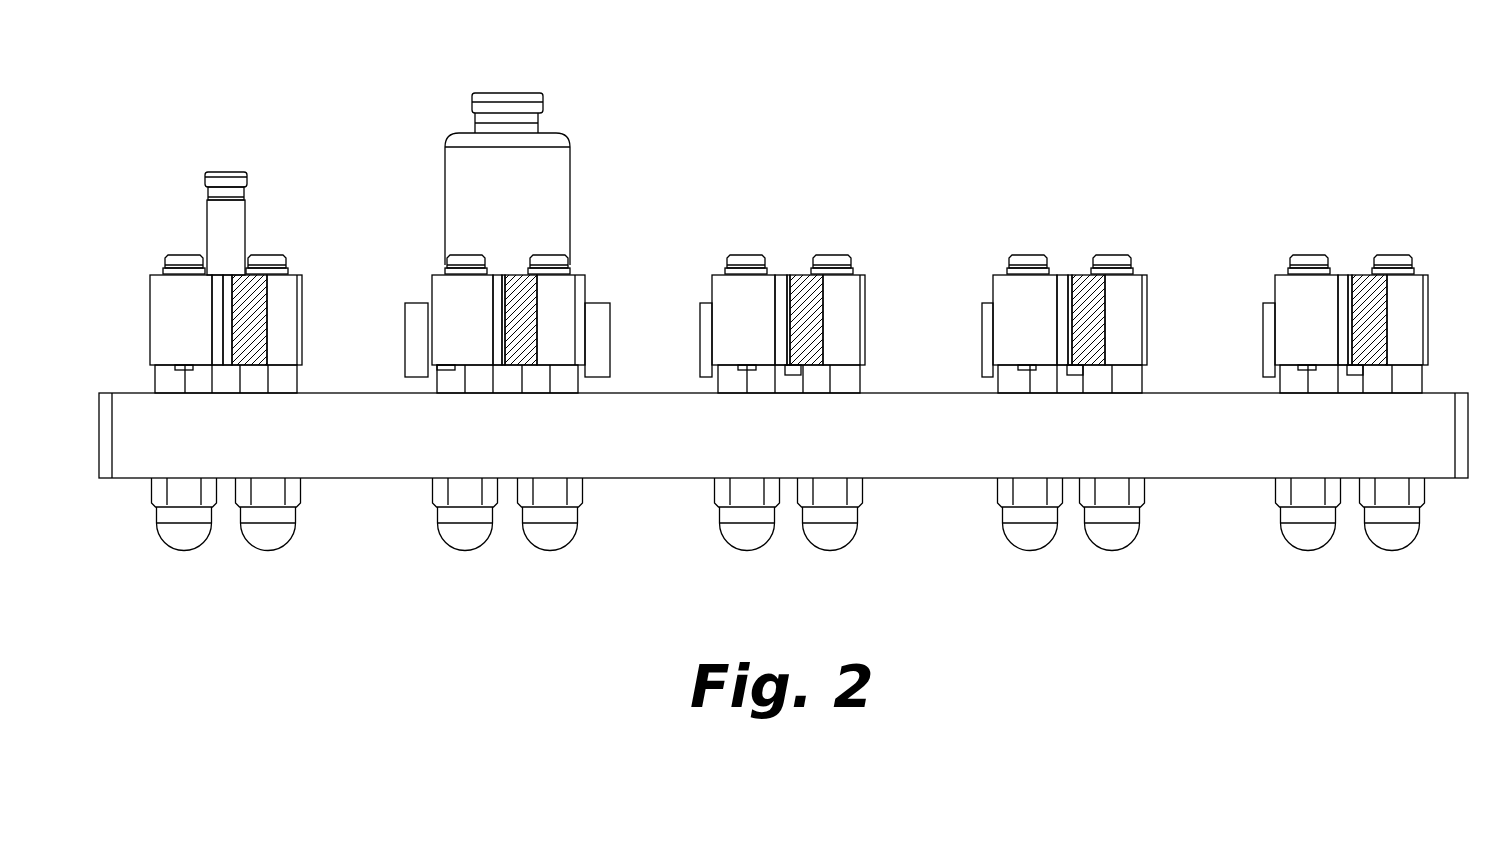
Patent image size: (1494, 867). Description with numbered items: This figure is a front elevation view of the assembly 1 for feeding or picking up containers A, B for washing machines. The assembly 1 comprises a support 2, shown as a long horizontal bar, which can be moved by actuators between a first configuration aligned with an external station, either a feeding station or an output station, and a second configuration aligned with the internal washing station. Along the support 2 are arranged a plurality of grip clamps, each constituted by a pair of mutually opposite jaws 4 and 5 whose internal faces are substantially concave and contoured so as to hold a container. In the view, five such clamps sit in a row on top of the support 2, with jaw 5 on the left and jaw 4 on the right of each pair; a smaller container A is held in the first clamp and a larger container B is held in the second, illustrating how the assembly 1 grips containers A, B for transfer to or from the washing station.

The assembly 1 is at (1145, 149).
The support 2 is at (372, 462).
The jaw 4 is at (285, 300).
The jaw 5 is at (175, 298).
The container A is at (217, 218).
The container B is at (548, 186).